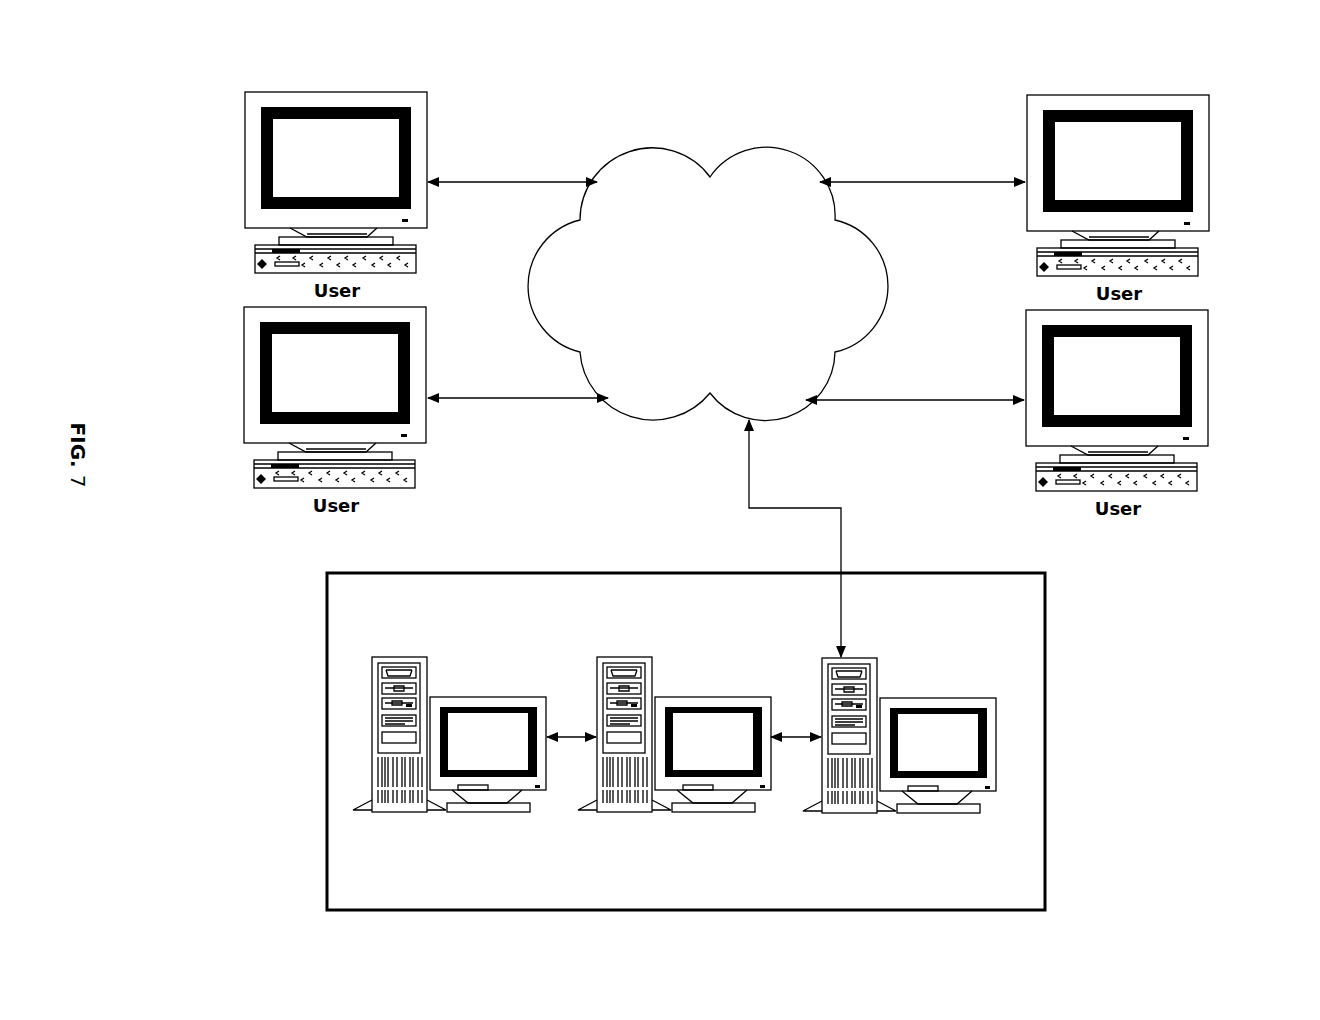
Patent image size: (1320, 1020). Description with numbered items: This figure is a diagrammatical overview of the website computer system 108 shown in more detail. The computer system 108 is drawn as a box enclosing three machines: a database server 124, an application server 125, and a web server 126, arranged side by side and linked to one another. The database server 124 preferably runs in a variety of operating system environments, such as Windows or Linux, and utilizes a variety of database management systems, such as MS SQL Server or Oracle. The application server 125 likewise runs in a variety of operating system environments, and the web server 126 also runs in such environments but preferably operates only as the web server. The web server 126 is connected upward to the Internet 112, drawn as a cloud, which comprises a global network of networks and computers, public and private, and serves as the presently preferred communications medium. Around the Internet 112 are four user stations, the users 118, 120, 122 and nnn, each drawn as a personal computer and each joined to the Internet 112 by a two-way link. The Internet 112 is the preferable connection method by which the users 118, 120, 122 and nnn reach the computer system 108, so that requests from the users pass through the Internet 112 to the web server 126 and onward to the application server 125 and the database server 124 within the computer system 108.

The computer system 108 is at (647, 572).
The Internet 112 is at (750, 207).
The user 118 is at (431, 106).
The user 120 is at (434, 339).
The user 122 is at (1214, 160).
The user nnn is at (1216, 344).
The database server 124 is at (494, 695).
The application server 125 is at (716, 695).
The web server 126 is at (942, 693).